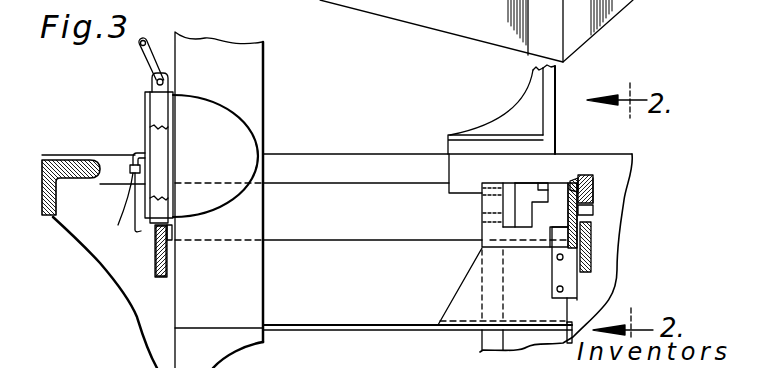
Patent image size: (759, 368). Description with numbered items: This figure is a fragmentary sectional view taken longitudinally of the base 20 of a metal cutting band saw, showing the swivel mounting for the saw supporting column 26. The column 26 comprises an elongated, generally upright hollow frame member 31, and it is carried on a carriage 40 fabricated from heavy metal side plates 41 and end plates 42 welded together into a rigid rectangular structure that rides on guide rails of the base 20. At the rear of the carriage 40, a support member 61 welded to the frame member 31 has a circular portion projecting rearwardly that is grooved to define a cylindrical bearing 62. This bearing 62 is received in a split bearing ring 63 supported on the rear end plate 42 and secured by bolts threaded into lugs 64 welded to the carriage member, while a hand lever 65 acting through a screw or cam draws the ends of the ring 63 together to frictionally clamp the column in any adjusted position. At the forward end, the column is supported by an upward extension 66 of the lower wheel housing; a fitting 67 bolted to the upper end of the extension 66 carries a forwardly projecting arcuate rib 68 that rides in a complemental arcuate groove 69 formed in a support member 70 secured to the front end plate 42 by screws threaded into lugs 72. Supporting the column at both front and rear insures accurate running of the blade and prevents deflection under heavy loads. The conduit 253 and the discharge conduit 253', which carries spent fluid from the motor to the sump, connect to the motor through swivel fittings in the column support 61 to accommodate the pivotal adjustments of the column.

The base 20 is at (36, 195).
The C-shaped column 26 is at (267, 86).
The frame member 31 is at (182, 308).
The carriage 40 is at (151, 264).
The side plates 41 is at (363, 238).
The end plates 42 is at (592, 273).
The support member 61 is at (195, 115).
The cylindrical bearing 62 is at (170, 160).
The split bearing ring 63 is at (153, 113).
The lugs 64 is at (152, 227).
The hand lever 65 is at (150, 62).
The upward extension 66 is at (523, 285).
The fitting 67 is at (569, 185).
The arcuate rib 68 is at (580, 181).
The arcuate groove 69 is at (593, 190).
The support member 70 is at (595, 180).
The lugs 72 is at (593, 210).
The conduit 253 is at (106, 202).
The discharge conduit 253' is at (102, 204).